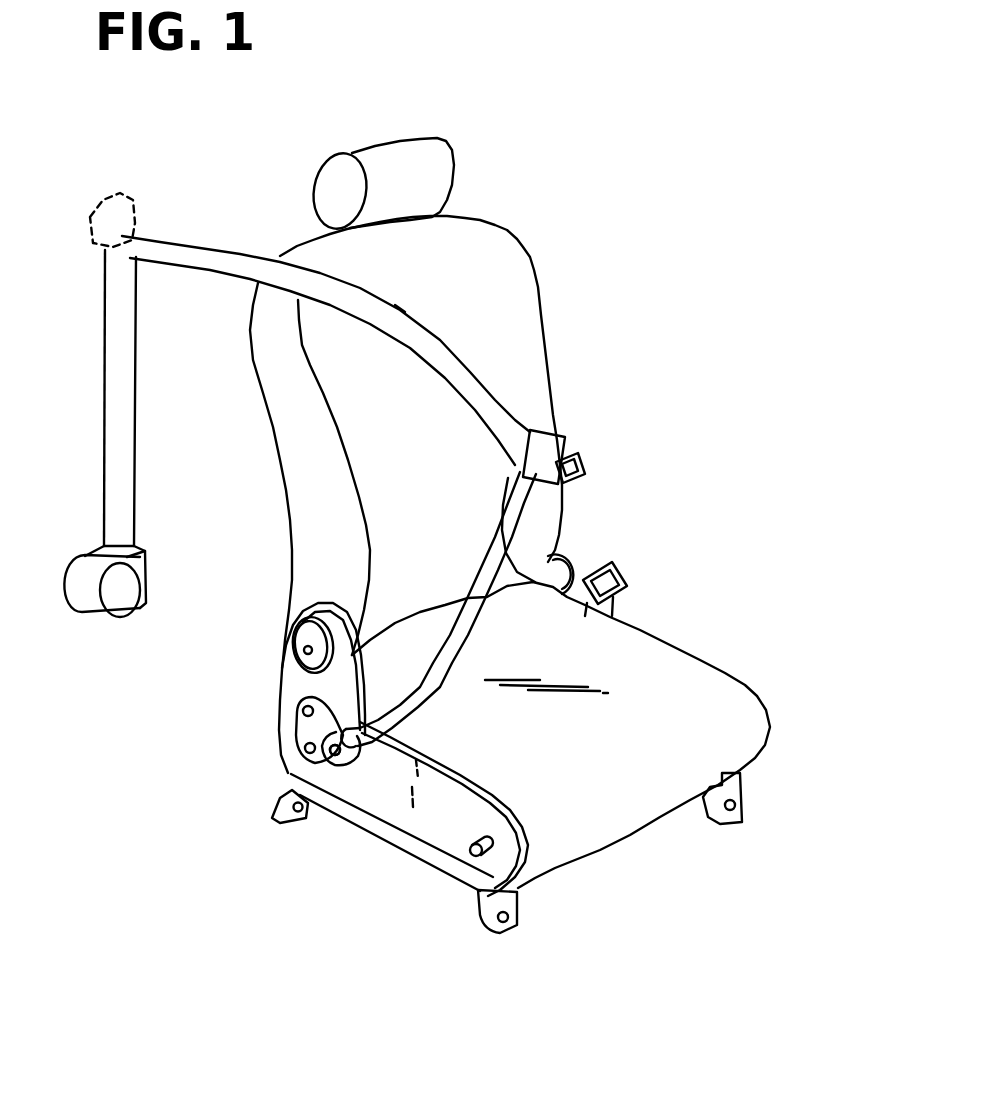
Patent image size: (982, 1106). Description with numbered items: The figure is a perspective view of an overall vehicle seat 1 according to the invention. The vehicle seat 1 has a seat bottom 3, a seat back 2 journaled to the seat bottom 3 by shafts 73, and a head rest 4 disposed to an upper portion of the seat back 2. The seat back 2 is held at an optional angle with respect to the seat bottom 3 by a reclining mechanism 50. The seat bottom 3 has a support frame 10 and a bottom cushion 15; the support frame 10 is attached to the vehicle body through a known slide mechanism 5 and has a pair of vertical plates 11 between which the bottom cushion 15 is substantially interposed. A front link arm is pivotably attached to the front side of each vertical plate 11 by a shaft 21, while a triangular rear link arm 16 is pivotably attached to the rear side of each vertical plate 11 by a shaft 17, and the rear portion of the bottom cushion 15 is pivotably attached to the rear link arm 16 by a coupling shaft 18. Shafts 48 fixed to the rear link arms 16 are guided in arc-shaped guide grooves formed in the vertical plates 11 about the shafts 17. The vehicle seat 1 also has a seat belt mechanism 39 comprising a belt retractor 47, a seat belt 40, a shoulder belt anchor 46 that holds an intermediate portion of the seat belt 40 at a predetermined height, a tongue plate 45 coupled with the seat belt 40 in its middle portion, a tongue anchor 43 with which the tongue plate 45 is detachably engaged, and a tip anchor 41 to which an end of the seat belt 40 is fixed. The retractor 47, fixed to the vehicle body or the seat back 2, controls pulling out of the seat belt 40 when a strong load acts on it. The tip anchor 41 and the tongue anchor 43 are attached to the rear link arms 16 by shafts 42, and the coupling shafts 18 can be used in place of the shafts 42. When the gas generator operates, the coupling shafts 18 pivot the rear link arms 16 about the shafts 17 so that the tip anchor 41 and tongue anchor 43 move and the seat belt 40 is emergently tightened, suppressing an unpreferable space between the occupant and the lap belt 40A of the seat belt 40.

The vehicle seat 1 is at (540, 293).
The seat back 2 is at (525, 360).
The seat bottom 3 is at (656, 638).
The head rest 4 is at (436, 178).
The slide mechanism 5 is at (410, 863).
The support frame 10 is at (510, 840).
The vertical plate 11 is at (437, 853).
The bottom cushion 15 is at (714, 694).
The rear link arm 16 is at (303, 738).
The shaft 17 is at (302, 712).
The coupling shaft 18 is at (332, 760).
The shaft 21 is at (474, 858).
The seat belt mechanism 39 is at (416, 324).
The seat belt 40 is at (220, 256).
The lap belt 40A is at (466, 573).
The tip anchor 41 is at (352, 768).
The shaft 42 is at (332, 760).
The tongue anchor 43 is at (612, 572).
The tongue plate 45 is at (583, 462).
The shoulder belt anchor 46 is at (108, 203).
The belt retractor 47 is at (117, 597).
The shaft 48 is at (305, 755).
The reclining mechanism 50 is at (302, 657).
The shaft 73 is at (304, 647).